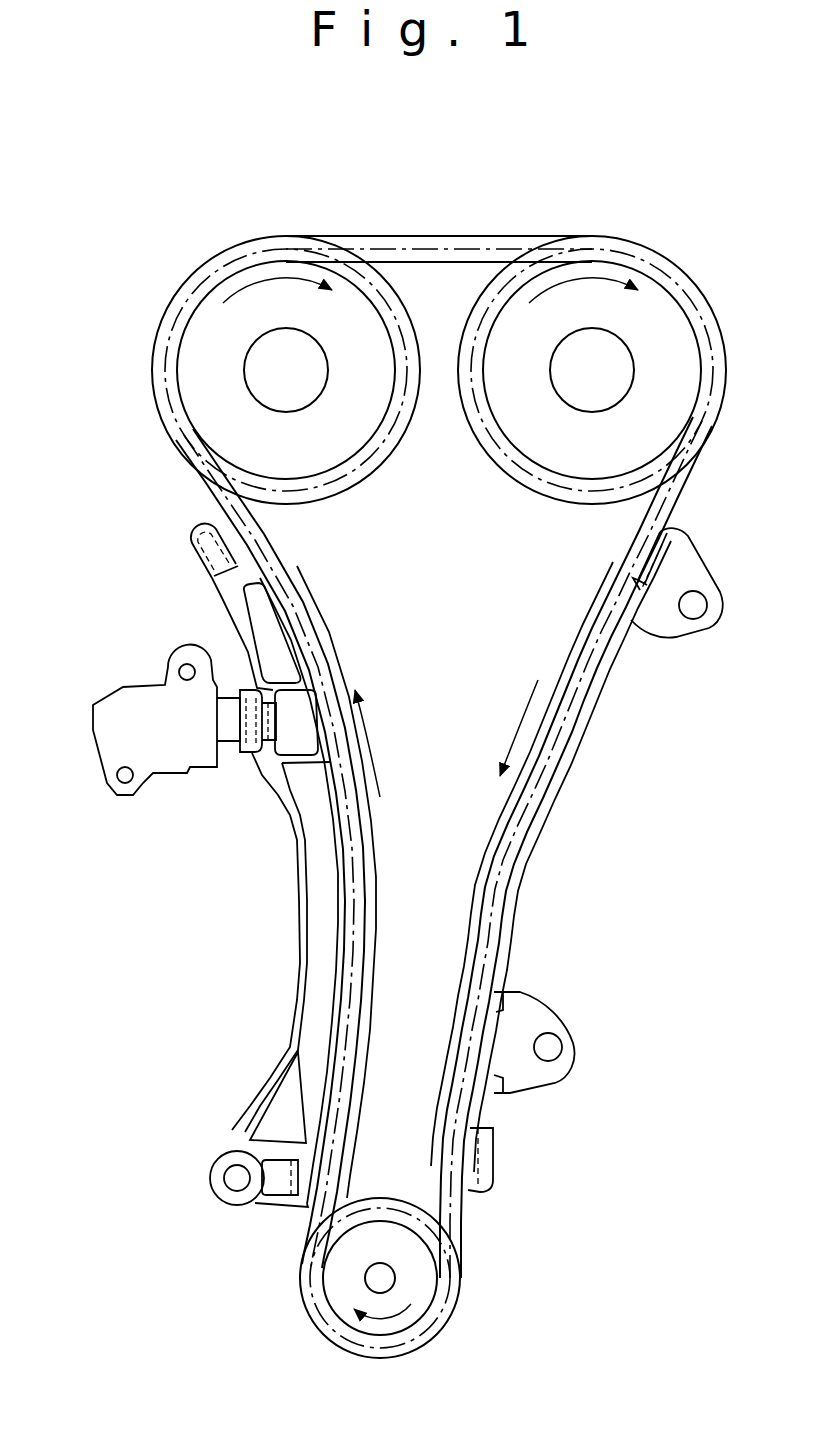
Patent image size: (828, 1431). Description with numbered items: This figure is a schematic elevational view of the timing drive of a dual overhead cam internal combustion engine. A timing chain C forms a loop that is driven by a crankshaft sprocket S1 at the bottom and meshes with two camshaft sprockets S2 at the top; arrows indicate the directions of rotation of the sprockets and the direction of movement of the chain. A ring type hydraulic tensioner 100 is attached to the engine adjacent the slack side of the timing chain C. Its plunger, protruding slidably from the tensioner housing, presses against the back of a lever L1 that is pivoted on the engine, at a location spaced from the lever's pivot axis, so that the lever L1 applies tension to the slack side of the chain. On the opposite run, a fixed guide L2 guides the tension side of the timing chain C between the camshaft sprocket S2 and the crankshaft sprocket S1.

The timing chain C is at (456, 237).
The crankshaft sprocket S1 is at (410, 1283).
The camshaft sprockets S2 is at (331, 440).
The lever L1 is at (297, 962).
The fixed guide L2 is at (540, 873).
The ring type hydraulic tensioner 100 is at (145, 650).